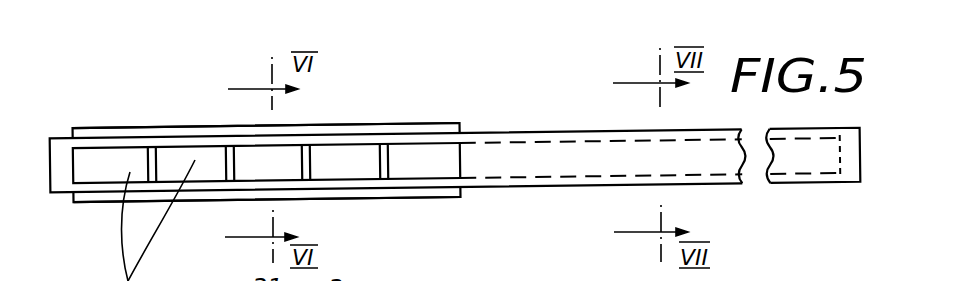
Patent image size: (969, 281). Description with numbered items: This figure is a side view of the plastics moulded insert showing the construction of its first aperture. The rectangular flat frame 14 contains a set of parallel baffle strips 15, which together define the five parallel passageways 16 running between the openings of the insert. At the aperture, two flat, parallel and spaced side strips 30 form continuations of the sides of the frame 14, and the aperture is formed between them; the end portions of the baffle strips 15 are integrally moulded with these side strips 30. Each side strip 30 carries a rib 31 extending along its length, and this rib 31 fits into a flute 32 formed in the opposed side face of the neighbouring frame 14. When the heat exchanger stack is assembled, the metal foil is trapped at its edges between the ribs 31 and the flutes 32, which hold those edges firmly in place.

The frame 14 is at (62, 183).
The baffle strips 15 is at (224, 158).
The passageways 16 is at (292, 173).
The side strips 30 is at (425, 133).
The rib 31 is at (320, 128).
The flute 32 is at (688, 135).